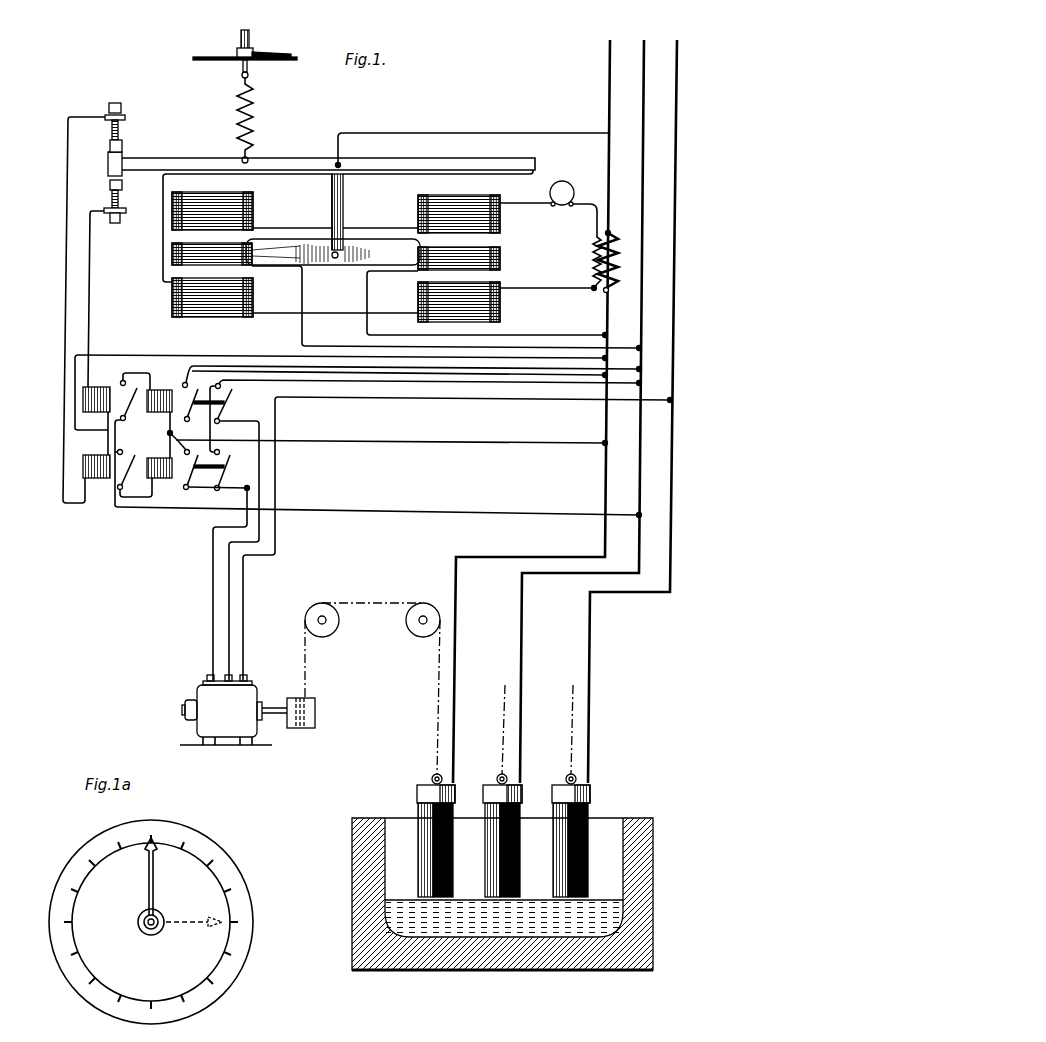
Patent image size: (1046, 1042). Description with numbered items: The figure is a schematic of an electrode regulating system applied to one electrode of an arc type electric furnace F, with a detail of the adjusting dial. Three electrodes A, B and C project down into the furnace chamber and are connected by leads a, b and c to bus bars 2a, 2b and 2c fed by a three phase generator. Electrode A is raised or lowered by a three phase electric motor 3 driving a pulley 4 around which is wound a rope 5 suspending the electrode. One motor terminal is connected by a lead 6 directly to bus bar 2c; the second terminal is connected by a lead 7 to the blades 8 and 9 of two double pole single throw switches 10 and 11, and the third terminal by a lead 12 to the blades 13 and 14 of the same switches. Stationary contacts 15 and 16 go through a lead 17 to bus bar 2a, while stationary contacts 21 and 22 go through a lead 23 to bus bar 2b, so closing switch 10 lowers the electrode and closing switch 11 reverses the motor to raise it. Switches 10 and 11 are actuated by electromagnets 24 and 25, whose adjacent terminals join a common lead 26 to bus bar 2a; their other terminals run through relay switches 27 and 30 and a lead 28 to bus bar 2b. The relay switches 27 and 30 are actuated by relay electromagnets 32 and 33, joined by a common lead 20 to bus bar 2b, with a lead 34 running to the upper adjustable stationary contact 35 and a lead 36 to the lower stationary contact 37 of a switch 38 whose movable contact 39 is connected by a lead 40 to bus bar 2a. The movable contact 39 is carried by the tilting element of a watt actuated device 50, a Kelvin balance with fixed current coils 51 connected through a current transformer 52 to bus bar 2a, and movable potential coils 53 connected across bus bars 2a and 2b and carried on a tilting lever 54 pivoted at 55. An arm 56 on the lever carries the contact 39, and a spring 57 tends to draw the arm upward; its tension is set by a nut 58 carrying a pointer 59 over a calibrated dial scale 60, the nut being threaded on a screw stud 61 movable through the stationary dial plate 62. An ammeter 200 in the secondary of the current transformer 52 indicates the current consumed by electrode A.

In FIG. 1, the bus bar 2a is at (677, 527).
In FIG. 1, the bus bar 2b is at (644, 70).
In FIG. 1, the bus bar 2c is at (677, 92).
In FIG. 1, the three phase electric motor 3 is at (233, 710).
In FIG. 1, the pulley 4 is at (315, 712).
In FIG. 1, the rope 5 is at (374, 603).
In FIG. 1, the lead 6 is at (243, 578).
In FIG. 1, the lead 7 is at (229, 598).
In FIG. 1, the switch blade 8 is at (205, 470).
In FIG. 1, the switch blade 9 is at (226, 411).
In FIG. 1, the double pole single throw switch 10 is at (200, 495).
In FIG. 1, the double pole single throw switch 11 is at (201, 405).
In FIG. 1, the lead 12 is at (213, 598).
In FIG. 1, the switch blade 13 is at (231, 473).
In FIG. 1, the switch blade 14 is at (207, 378).
In FIG. 1, the stationary contact 15 is at (181, 452).
In FIG. 1, the stationary contact 16 is at (176, 378).
In FIG. 1, the lead 17 is at (255, 367).
In FIG. 1, the common lead 20 is at (170, 353).
In FIG. 1, the stationary contact 21 is at (222, 450).
In FIG. 1, the stationary contact 22 is at (430, 386).
In FIG. 1, the lead 23 is at (352, 384).
In FIG. 1, the electromagnet 24 is at (158, 478).
In FIG. 1, the electromagnet 25 is at (155, 412).
In FIG. 1, the common lead 26 is at (386, 445).
In FIG. 1, the relay switch 27 is at (137, 467).
In FIG. 1, the lead 28 is at (376, 511).
In FIG. 1, the relay switch 30 is at (136, 389).
In FIG. 1, the relay electromagnet 32 is at (91, 445).
In FIG. 1, the relay electromagnet 33 is at (108, 384).
In FIG. 1, the lead 34 is at (63, 442).
In FIG. 1, the upper adjustable stationary contact 35 is at (121, 138).
In FIG. 1, the lead 36 is at (89, 316).
In FIG. 1, the lower stationary contact 37 is at (122, 190).
In FIG. 1, the switch 38 is at (108, 168).
In FIG. 1, the movable contact 39 is at (108, 156).
In FIG. 1, the lead 40 is at (440, 130).
In FIG. 1, the watt actuated device 50 is at (333, 266).
In FIG. 1, the fixed current coils 51 is at (253, 210).
In FIG. 1, the current transformer 52 is at (594, 262).
In FIG. 1, the movable potential coils 53 is at (172, 254).
In FIG. 1, the tilting lever 54 is at (322, 250).
In FIG. 1, the pivot 55 is at (340, 252).
In FIG. 1, the arm 56 is at (296, 168).
In FIG. 1, the spring 57 is at (252, 113).
In FIG. 1, the nut 58 is at (238, 51).
In FIG. 1A, the nut 58 is at (148, 934).
In FIG. 1, the pointer 59 is at (265, 53).
In FIG. 1A, the pointer 59 is at (148, 883).
In FIG. 1A, the calibrated dial scale 60 is at (238, 878).
In FIG. 1, the screw stud 61 is at (241, 66).
In FIG. 1A, the screw stud 61 is at (138, 922).
In FIG. 1, the stationary dial plate 62 is at (260, 62).
In FIG. 1A, the stationary dial plate 62 is at (254, 906).
In FIG. 1, the ammeter 200 is at (544, 184).
In FIG. 1, the lead a is at (455, 745).
In FIG. 1, the lead b is at (521, 745).
In FIG. 1, the lead c is at (589, 745).
In FIG. 1, the electrode A is at (418, 806).
In FIG. 1, the electrode B is at (485, 806).
In FIG. 1, the electrode C is at (590, 806).
In FIG. 1, the electric furnace F is at (510, 960).